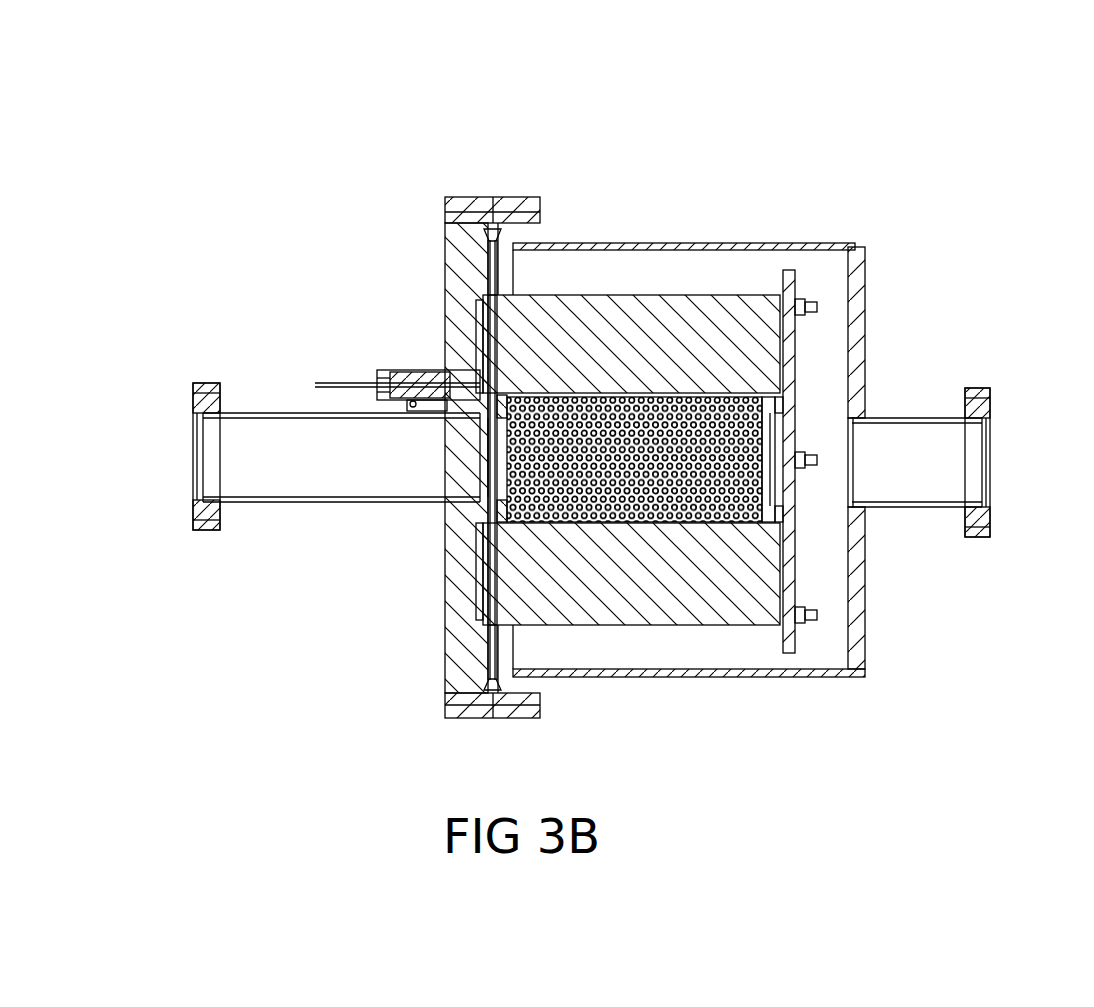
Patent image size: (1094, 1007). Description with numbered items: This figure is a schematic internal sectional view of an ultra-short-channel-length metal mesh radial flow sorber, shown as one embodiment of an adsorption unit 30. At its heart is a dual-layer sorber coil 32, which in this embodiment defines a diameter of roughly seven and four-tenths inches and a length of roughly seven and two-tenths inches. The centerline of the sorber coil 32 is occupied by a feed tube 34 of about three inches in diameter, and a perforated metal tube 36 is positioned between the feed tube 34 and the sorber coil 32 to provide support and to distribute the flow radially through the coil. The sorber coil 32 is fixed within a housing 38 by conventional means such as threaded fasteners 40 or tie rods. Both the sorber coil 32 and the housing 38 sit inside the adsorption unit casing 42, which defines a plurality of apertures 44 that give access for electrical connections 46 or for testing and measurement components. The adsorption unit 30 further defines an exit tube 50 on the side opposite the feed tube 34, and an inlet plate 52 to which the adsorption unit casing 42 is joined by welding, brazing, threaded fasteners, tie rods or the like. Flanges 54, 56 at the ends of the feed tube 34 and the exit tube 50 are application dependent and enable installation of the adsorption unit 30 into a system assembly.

The adsorption unit 30 is at (796, 52).
The dual-layer sorber coil 32 is at (573, 325).
The feed tube 34 is at (290, 475).
The perforated metal tube 36 is at (668, 425).
The housing 38 is at (788, 563).
The threaded fasteners 40 is at (810, 305).
The adsorption unit casing 42 is at (812, 243).
The apertures 44 is at (443, 378).
The electrical connections 46 is at (345, 385).
The exit tube 50 is at (893, 430).
The inlet plate 52 is at (460, 662).
The flange 54 is at (198, 403).
The flange 56 is at (978, 415).